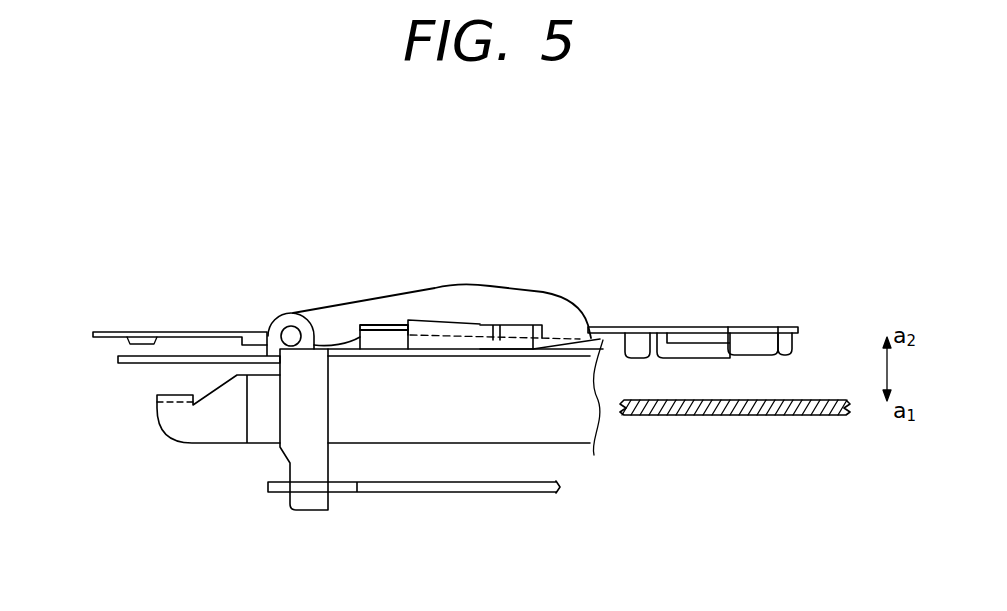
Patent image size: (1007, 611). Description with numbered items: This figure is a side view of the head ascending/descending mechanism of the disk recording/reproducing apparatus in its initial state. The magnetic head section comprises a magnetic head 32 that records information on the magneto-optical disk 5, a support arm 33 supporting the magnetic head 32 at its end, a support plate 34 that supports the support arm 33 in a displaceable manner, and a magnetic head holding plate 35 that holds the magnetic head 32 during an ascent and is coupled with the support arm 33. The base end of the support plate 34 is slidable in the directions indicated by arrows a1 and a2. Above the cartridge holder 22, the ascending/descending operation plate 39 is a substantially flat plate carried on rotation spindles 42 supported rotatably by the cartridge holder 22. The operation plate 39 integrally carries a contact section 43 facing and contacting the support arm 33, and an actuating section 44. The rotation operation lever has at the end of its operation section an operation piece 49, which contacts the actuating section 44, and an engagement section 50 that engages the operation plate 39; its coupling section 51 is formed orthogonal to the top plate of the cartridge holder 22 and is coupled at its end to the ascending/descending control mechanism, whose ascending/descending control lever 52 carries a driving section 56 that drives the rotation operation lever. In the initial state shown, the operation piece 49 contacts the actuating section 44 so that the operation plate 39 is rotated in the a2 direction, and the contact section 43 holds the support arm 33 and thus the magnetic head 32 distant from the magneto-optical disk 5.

The magneto-optical disk 5 is at (777, 411).
The cartridge holder 22 is at (217, 428).
The magnetic head 32 is at (680, 340).
The support arm 33 is at (598, 327).
The support plate 34 is at (120, 332).
The magnetic head holding plate 35 is at (757, 327).
The ascending/descending operation plate 39 is at (435, 303).
The rotation spindle 42 is at (291, 336).
The contact section 43 is at (572, 340).
The actuating section 44 is at (392, 325).
The operation piece 49 is at (358, 338).
The engagement section 50 is at (515, 325).
The coupling section 51 is at (298, 423).
The ascending/descending control lever 52 is at (477, 482).
The driving section 56 is at (312, 485).